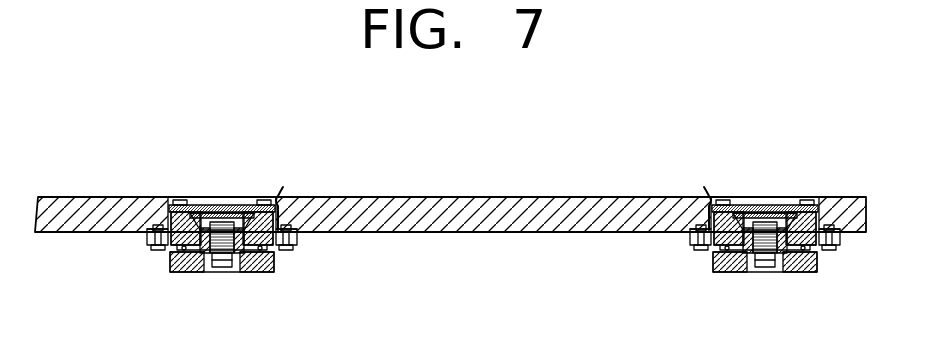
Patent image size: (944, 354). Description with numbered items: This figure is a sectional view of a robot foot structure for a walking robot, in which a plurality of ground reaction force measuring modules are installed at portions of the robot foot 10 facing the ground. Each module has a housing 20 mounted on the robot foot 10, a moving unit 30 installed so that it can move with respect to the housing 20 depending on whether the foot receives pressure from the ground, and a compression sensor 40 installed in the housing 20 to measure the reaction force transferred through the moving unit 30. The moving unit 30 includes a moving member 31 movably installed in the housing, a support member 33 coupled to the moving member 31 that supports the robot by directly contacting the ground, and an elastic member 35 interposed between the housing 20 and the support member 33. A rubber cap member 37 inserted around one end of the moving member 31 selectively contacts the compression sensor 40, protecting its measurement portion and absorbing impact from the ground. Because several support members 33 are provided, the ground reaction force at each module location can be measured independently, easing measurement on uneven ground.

The robot foot 10 is at (622, 200).
The housing 20 is at (713, 252).
The moving unit 30 is at (798, 235).
The moving member 31 is at (793, 207).
The support member 33 is at (790, 270).
The elastic member 35 is at (748, 270).
The cap member 37 is at (763, 210).
The compression sensor 40 is at (710, 188).